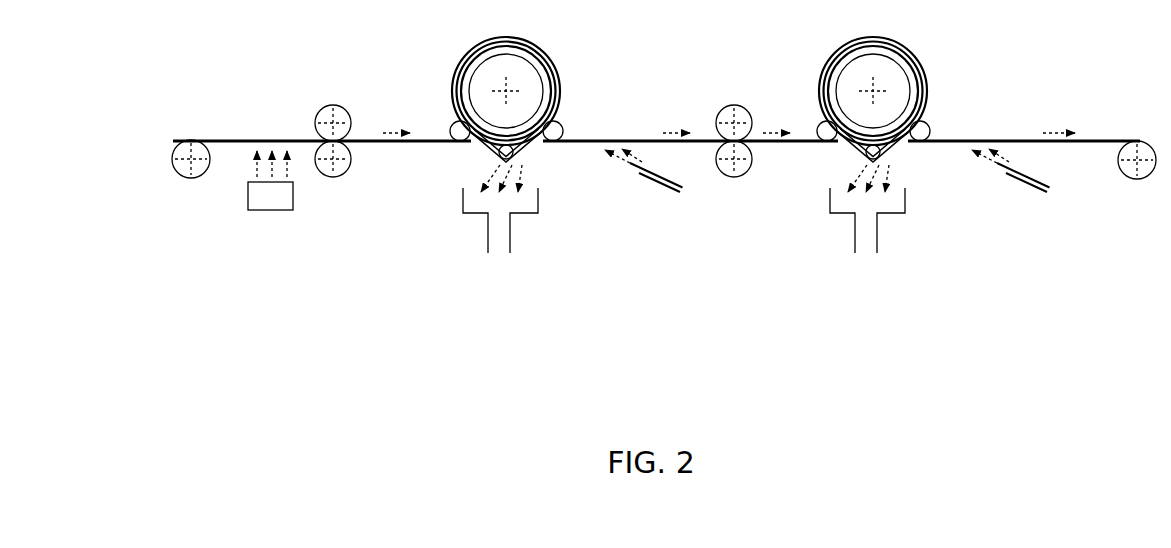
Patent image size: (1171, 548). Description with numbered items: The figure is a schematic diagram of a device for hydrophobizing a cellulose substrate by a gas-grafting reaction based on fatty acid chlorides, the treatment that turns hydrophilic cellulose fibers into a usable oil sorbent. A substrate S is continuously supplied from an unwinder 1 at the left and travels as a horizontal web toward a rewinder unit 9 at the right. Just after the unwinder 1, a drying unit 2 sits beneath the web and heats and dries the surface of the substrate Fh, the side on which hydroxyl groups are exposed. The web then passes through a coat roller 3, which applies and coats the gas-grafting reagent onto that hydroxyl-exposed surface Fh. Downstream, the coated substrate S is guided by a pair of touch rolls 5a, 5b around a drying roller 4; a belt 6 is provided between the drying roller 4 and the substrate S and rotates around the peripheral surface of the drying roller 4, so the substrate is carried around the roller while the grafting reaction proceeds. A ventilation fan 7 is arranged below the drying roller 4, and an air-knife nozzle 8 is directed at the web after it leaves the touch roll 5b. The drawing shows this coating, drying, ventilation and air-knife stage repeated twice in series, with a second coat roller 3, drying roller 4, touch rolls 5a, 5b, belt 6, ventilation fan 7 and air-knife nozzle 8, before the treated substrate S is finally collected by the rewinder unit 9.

The unwinder 1 is at (191, 179).
The drying unit 2 is at (293, 194).
The coat roller 3 is at (343, 91).
The drying roller 4 is at (542, 50).
The touch roll 5a is at (451, 126).
The touch roll 5b is at (561, 124).
The belt 6 is at (557, 87).
The ventilation fan 7 is at (540, 199).
The air-knife nozzle 8 is at (655, 185).
The rewinder unit 9 is at (1138, 180).
The substrate S is at (232, 131).
The surface of the substrate Fh is at (241, 150).